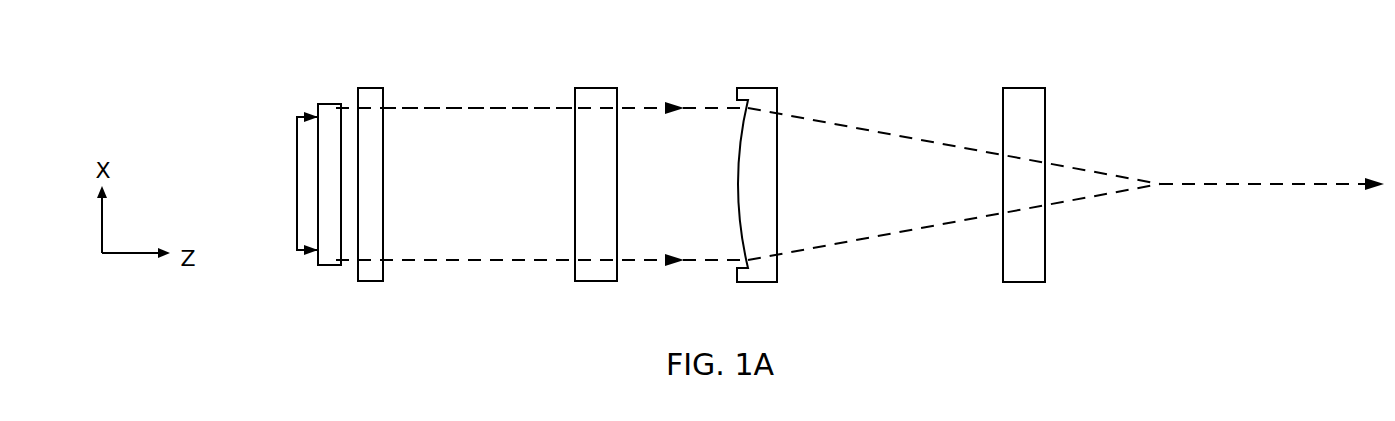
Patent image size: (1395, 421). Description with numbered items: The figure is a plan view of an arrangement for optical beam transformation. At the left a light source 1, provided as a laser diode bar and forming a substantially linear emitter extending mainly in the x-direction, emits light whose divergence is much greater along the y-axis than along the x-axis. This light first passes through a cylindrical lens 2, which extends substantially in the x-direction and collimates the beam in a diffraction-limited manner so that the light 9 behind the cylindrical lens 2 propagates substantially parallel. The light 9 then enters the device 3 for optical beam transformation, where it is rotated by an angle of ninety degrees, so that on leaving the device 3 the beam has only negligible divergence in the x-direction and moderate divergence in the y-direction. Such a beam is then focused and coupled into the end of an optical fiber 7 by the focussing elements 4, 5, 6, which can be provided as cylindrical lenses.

The light source 1 is at (297, 139).
The cylindrical lens 2 is at (329, 104).
The device for optical beam transformation 3 is at (365, 88).
The focussing element 4 is at (585, 88).
The focussing element 5 is at (748, 88).
The focussing element 6 is at (1013, 88).
The optical fiber 7 is at (1230, 182).
The light 9 is at (447, 106).